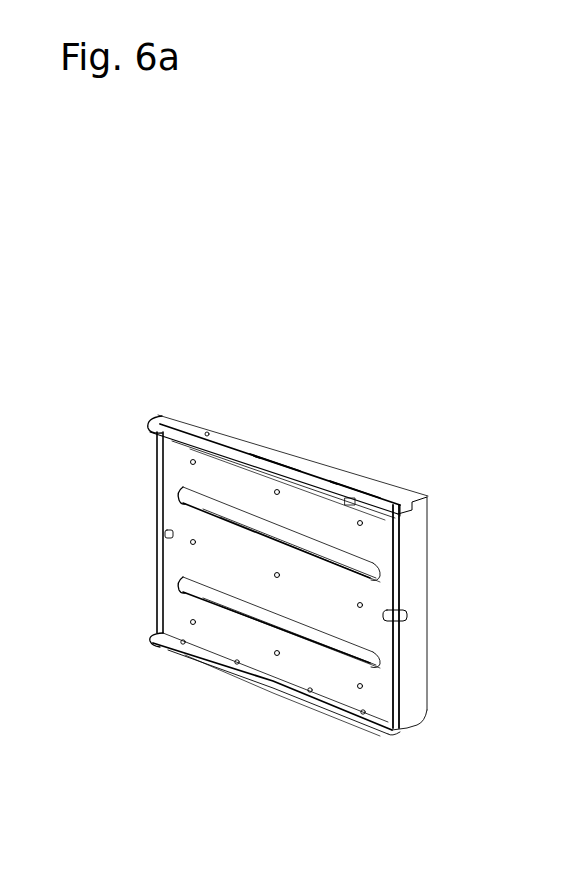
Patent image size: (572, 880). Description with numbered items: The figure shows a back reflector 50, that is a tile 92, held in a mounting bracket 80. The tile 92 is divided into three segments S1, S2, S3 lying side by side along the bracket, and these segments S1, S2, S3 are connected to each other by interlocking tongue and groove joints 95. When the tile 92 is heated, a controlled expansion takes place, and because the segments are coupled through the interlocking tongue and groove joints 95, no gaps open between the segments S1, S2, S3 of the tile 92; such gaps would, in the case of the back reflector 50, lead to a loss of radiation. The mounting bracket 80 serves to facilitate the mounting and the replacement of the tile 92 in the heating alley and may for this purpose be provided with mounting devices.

The interlocking tongue and groove joints 95 is at (257, 440).
The mounting bracket 80 is at (237, 596).
The back reflector 50 is at (470, 530).
The tile 92 is at (415, 625).
The first segment S1 is at (203, 424).
The second segment S2 is at (284, 447).
The third segment S3 is at (358, 471).